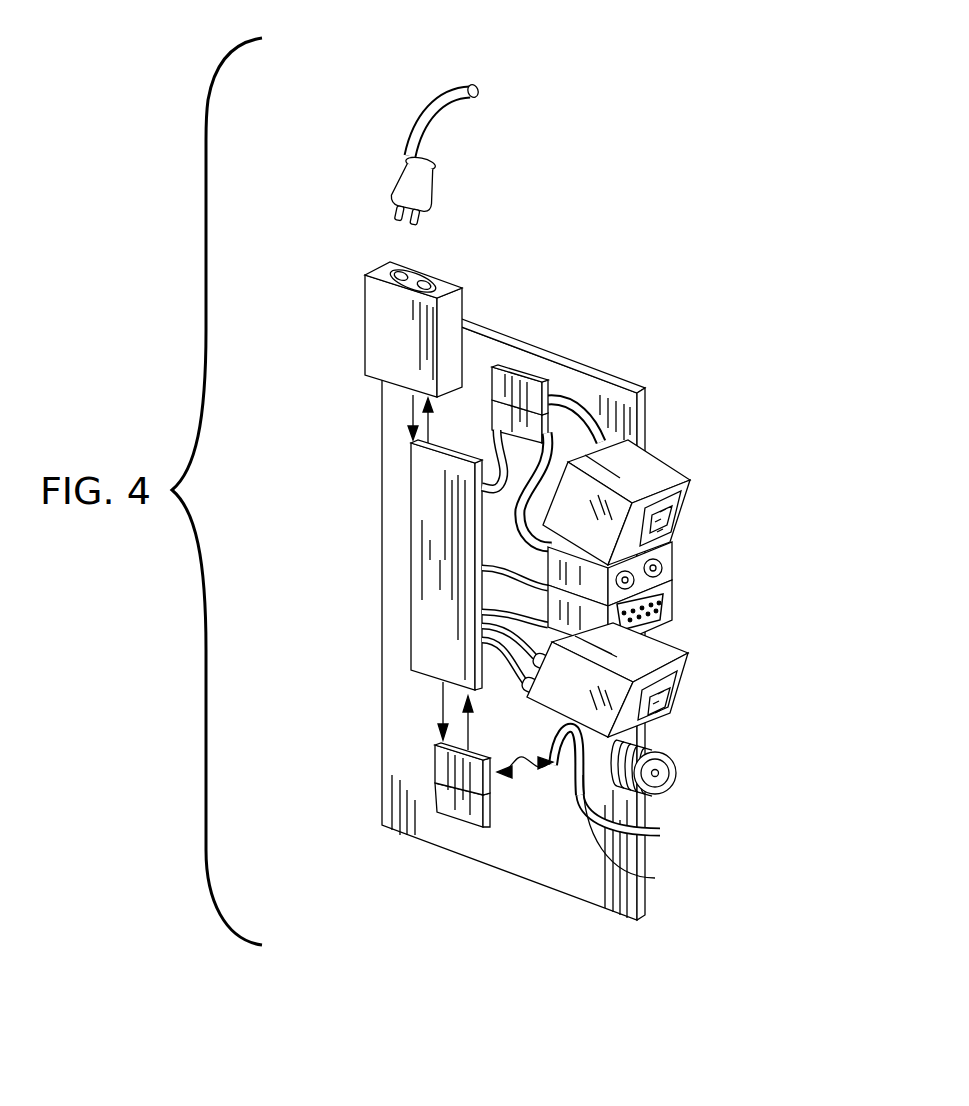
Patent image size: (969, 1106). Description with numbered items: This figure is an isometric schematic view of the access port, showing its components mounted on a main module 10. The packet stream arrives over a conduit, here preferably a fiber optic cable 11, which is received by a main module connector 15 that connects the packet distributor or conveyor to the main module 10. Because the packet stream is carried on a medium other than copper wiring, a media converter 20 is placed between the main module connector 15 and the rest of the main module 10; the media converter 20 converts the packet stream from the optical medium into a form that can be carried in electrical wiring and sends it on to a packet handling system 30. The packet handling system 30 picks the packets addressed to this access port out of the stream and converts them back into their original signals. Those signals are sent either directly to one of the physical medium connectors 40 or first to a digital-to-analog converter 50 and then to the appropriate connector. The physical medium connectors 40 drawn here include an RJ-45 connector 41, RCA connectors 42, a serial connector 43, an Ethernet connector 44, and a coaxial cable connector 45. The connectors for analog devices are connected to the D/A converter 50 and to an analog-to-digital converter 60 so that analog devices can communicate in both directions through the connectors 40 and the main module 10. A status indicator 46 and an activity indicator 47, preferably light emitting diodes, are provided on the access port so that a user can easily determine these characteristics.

The main module 10 is at (637, 382).
The fiber optic cable 11 is at (458, 83).
The main module connector 15 is at (448, 285).
The media converter 20 is at (363, 303).
The packet handling system 30 is at (410, 540).
The physical medium connectors 40 is at (788, 430).
The RJ-45 connector 41 is at (695, 497).
The RCA connectors 42 is at (700, 550).
The serial connector 43 is at (690, 614).
The Ethernet connector 44 is at (690, 668).
The coaxial cable connector 45 is at (690, 762).
The status indicator 46 is at (640, 832).
The activity indicator 47 is at (650, 878).
The digital-to-analog (D/A) converter 50 is at (495, 362).
The analog-to-digital (A/D) converter 60 is at (565, 400).